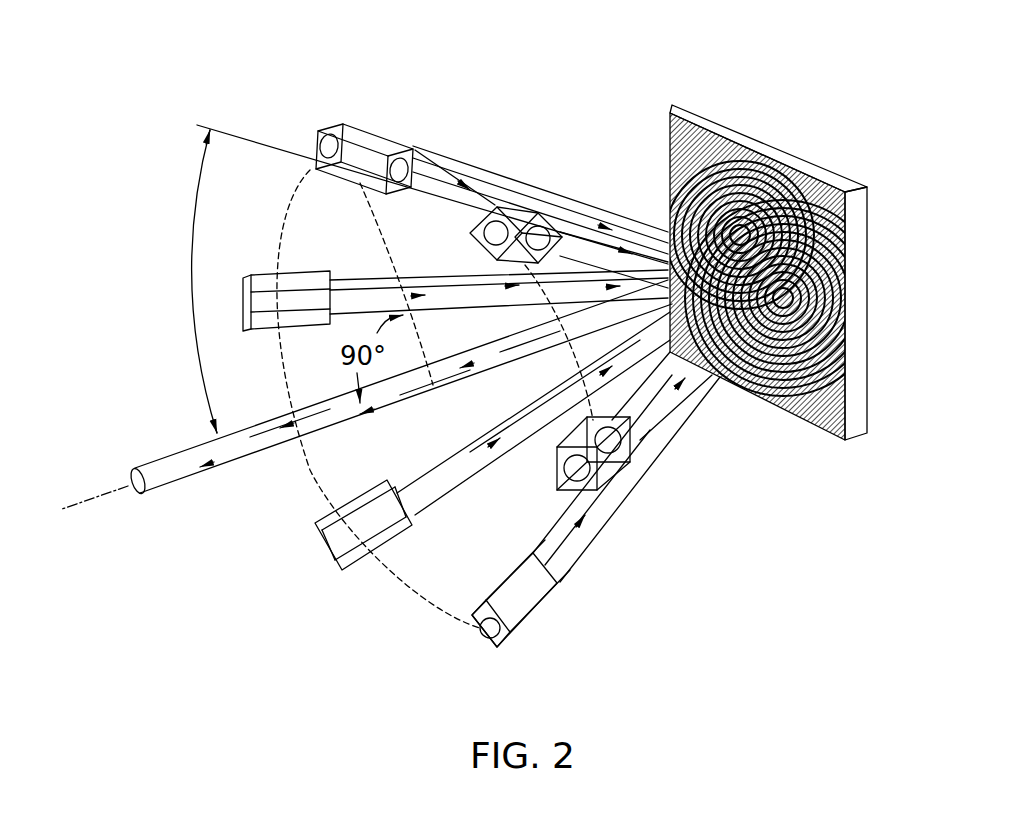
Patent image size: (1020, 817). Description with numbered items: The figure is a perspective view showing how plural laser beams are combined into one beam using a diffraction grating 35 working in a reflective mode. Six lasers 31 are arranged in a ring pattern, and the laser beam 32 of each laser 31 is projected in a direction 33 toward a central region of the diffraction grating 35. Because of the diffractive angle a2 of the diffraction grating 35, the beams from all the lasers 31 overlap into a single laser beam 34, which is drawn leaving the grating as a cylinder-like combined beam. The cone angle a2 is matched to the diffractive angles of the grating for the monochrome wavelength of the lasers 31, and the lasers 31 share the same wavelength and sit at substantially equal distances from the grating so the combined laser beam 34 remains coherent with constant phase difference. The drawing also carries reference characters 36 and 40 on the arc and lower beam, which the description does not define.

The laser 31 is at (357, 133).
The laser beam 32 is at (583, 217).
The direction 33 is at (453, 168).
The single laser beam 34 is at (173, 477).
The diffraction grating 35 is at (780, 152).
The rotation arc path 36 is at (203, 425).
The light beam 40 is at (577, 557).
The cone angle a2 is at (248, 252).